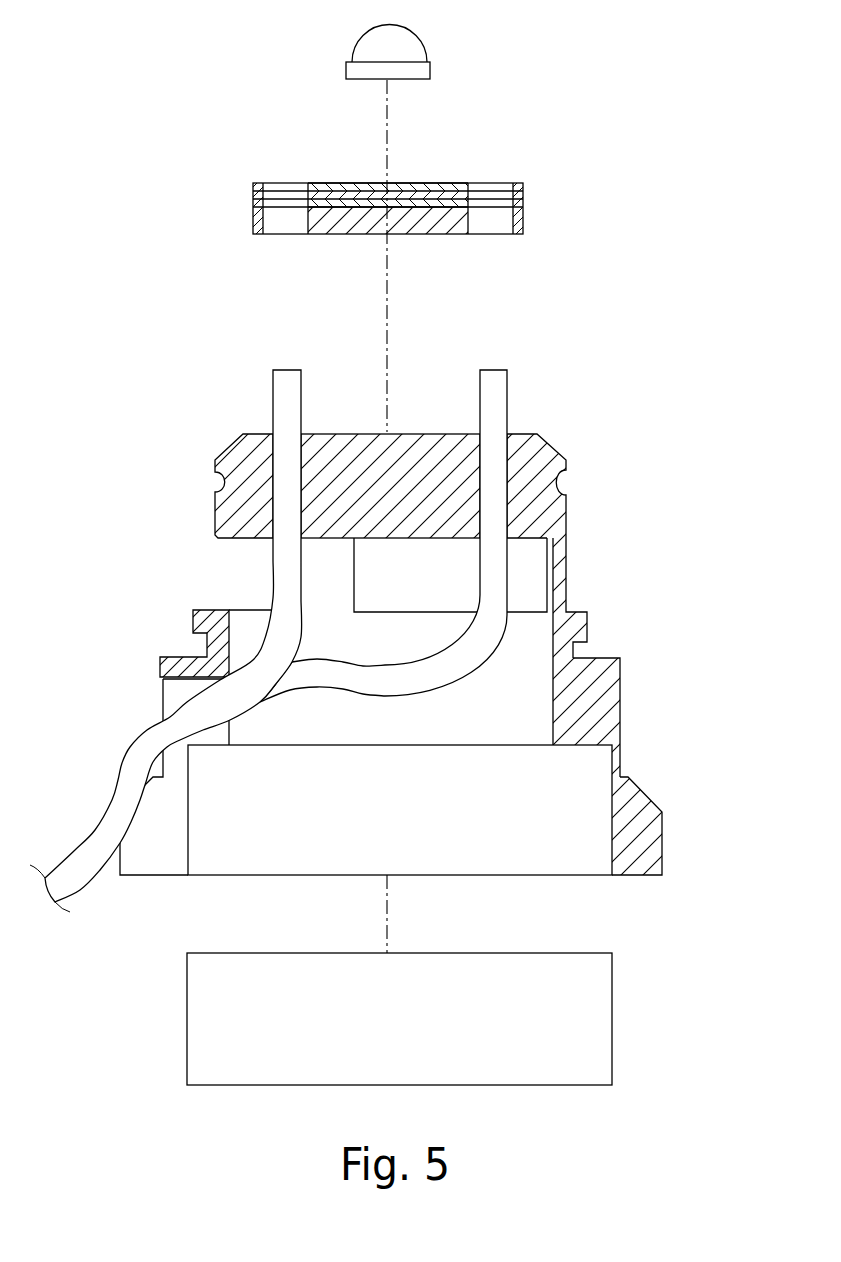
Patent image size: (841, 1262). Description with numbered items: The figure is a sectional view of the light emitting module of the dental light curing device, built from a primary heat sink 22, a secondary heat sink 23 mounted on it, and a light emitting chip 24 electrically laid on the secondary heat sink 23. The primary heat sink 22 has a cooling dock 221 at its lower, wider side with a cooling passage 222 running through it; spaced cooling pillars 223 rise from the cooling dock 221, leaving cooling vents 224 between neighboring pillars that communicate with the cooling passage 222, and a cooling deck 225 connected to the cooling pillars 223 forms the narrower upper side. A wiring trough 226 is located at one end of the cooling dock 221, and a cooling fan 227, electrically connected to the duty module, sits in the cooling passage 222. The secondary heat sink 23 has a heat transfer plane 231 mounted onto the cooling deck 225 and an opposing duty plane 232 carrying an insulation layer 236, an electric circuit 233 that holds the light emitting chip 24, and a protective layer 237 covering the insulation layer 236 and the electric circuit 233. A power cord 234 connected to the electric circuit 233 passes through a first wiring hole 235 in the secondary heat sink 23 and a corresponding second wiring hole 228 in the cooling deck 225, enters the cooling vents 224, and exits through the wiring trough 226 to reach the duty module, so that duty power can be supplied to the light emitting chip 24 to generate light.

The primary heat sink 22 is at (409, 628).
The secondary heat sink 23 is at (392, 211).
The light emitting chip 24 is at (430, 54).
The cooling dock 221 is at (621, 727).
The cooling passage 222 is at (533, 689).
The cooling pillars 223 is at (560, 572).
The cooling vents 224 is at (218, 609).
The wiring trough 226 is at (178, 695).
The cooling deck 225 is at (553, 458).
The cooling fan 227 is at (613, 1020).
The second wiring hole 228 is at (270, 480).
The heat transfer plane 231 is at (337, 236).
The duty plane 232 is at (329, 183).
The electric circuit 233 is at (253, 195).
The power cord 234 is at (283, 392).
The first wiring hole 235 is at (487, 224).
The insulation layer 236 is at (253, 201).
The protective layer 237 is at (255, 185).